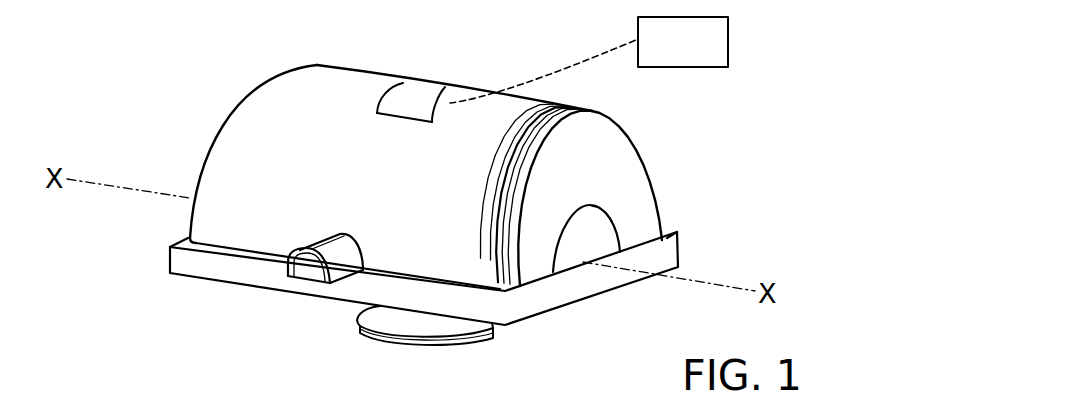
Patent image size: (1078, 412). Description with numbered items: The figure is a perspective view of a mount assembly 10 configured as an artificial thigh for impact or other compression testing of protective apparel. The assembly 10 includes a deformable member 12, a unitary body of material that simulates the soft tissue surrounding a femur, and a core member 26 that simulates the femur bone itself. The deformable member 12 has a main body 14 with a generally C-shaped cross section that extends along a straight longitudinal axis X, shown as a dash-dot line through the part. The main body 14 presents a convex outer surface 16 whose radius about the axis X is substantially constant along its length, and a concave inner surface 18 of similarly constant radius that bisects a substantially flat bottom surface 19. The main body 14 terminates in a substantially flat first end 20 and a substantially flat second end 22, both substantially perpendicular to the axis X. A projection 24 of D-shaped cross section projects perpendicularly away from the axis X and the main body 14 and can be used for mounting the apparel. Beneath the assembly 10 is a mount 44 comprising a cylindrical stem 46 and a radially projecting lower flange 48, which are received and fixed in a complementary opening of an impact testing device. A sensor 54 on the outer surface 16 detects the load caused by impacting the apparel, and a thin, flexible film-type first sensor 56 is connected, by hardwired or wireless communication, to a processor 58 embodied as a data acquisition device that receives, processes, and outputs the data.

The mount assembly 10 is at (216, 86).
The deformable member 12 is at (223, 210).
The main body 14 is at (332, 105).
The convex outer surface 16 is at (413, 196).
The concave inner surface 18 is at (612, 223).
The bottom surface 19 is at (528, 288).
The first end 20 is at (633, 175).
The second end 22 is at (223, 123).
The projection 24 is at (306, 268).
The core member 26 is at (562, 267).
The mount 44 is at (395, 320).
The cylindrical stem 46 is at (415, 320).
The lower flange 48 is at (473, 333).
The sensor 54 is at (430, 90).
The first sensor 56 is at (445, 93).
The processor 58 is at (728, 35).